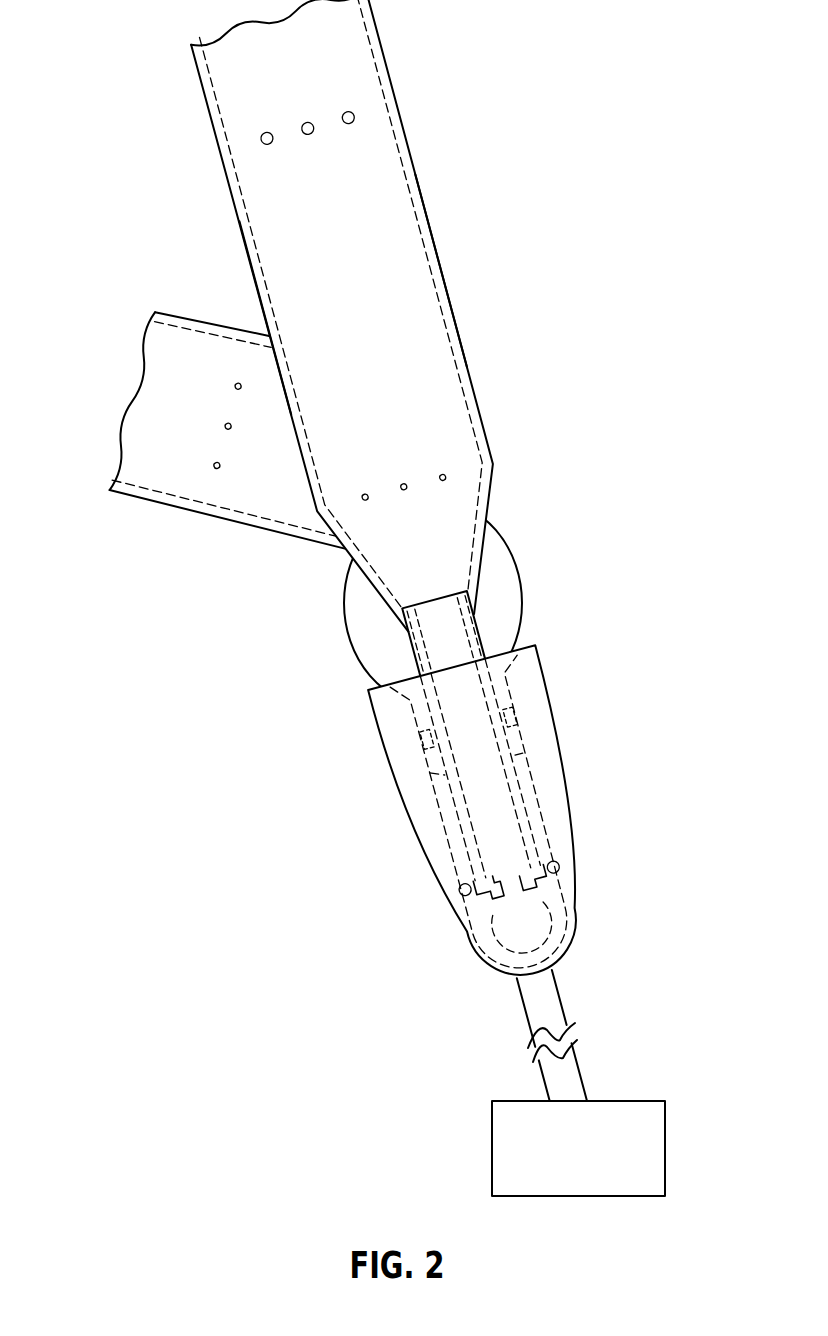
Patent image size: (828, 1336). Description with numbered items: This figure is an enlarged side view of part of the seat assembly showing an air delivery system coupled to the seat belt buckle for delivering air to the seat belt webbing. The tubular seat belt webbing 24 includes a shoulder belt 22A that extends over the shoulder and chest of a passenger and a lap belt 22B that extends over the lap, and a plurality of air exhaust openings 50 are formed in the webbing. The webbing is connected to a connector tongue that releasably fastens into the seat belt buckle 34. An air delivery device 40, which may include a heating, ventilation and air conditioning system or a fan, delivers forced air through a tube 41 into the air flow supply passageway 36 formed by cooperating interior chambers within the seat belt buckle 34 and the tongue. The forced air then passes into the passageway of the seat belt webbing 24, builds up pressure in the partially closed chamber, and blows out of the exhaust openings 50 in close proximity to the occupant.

The shoulder belt 22A is at (258, 200).
The lap belt 22B is at (233, 482).
The tubular seat belt webbing 24 is at (412, 350).
The seat belt buckle 34 is at (542, 773).
The air flow supply passageway 36 is at (495, 830).
The air delivery device 40 is at (492, 1128).
The tube 41 is at (558, 1002).
The air exhaust openings 50 is at (272, 133).